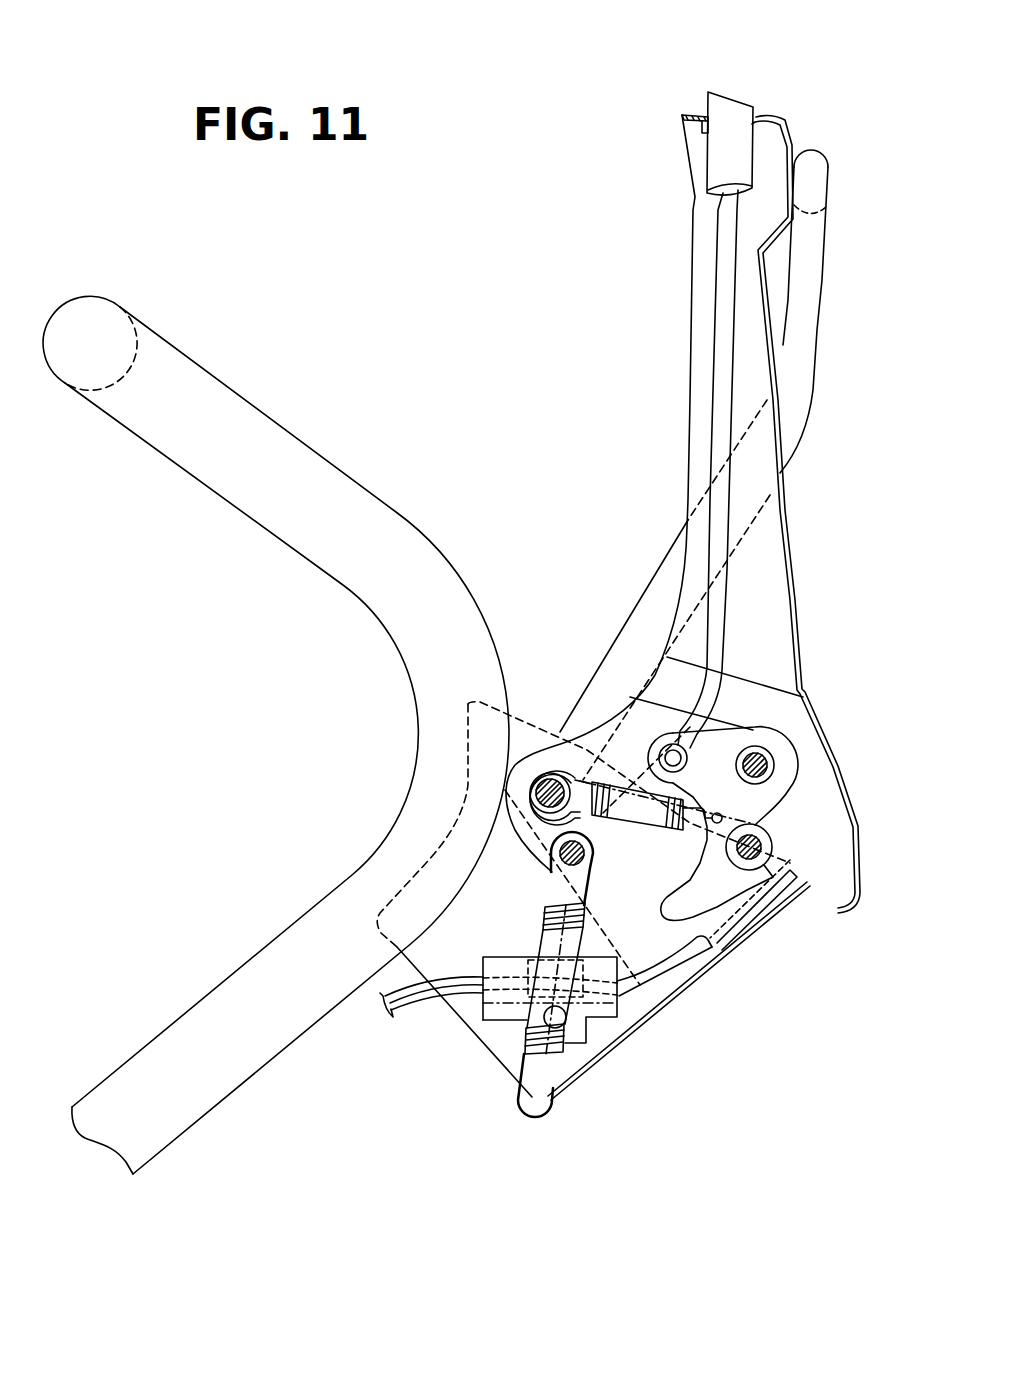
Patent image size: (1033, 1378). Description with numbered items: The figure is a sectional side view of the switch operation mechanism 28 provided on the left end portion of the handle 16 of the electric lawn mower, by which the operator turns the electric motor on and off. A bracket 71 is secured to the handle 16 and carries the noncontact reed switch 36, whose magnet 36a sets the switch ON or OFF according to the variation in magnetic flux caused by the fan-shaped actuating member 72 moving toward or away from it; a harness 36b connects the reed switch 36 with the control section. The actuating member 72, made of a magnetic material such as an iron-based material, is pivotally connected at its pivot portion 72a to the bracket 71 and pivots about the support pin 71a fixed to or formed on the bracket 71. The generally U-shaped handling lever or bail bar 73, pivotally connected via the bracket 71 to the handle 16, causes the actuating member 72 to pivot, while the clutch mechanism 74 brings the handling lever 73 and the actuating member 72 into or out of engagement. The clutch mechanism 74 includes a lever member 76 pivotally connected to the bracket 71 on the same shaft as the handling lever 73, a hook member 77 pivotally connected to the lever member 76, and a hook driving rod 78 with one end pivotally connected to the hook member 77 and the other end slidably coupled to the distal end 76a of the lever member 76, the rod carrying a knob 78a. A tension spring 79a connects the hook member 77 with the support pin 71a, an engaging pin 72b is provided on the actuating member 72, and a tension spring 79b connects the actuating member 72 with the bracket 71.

The handle 16 is at (240, 395).
The switch operation mechanism 28 is at (548, 72).
The noncontact reed switch 36 is at (485, 1022).
The magnet 36a is at (618, 959).
The harness 36b is at (412, 1015).
The bracket 71 is at (637, 1035).
The support pin 71a is at (515, 790).
The actuating member 72 is at (702, 982).
The pivot portion 72a is at (532, 772).
The engaging pin 72b is at (775, 833).
The handling lever 73 is at (819, 141).
The clutch mechanism 74 is at (650, 716).
The lever member 76 is at (690, 420).
The distal end 76a is at (693, 114).
The hook member 77 is at (797, 762).
The hook driving rod 78 is at (710, 286).
The knob 78a is at (737, 97).
The tension spring 79a is at (598, 818).
The tension spring 79b is at (527, 1070).